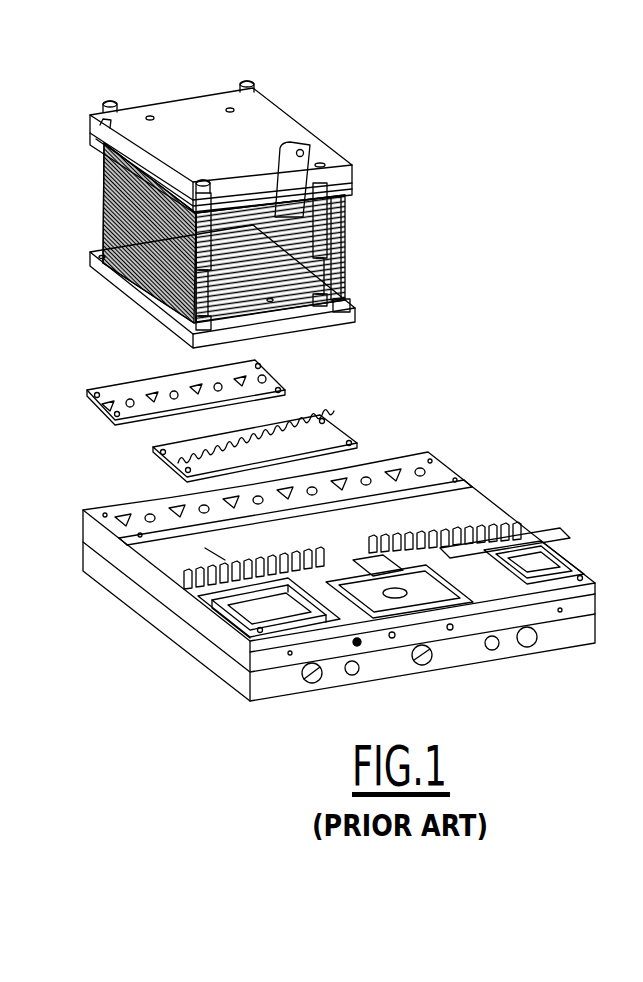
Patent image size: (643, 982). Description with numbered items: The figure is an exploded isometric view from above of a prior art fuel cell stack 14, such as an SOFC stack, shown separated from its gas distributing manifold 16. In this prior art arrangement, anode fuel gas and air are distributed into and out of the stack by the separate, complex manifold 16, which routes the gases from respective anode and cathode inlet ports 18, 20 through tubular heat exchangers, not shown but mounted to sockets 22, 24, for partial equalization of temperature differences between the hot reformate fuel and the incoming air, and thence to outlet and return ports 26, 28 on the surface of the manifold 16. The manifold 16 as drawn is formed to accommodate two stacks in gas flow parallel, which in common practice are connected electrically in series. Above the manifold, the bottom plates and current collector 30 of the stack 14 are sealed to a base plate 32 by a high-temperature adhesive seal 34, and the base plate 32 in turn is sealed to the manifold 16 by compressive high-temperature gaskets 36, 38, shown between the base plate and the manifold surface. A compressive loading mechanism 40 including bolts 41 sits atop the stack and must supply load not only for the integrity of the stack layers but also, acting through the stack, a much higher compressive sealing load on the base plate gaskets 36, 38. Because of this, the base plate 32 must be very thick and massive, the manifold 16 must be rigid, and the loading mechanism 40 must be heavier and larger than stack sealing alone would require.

The fuel cell stack 14 is at (303, 117).
The gas distributing manifold 16 is at (349, 540).
The anode inlet port 18 is at (357, 674).
The cathode inlet port 20 is at (310, 683).
The socket 22 is at (215, 655).
The socket 24 is at (548, 559).
The outlet port 26 is at (212, 562).
The return port 28 is at (152, 502).
The bottom plates and current collector 30 is at (335, 300).
The base plate 32 is at (330, 322).
The high-temperature adhesive seal 34 is at (337, 307).
The compressive high-temperature gasket 36 is at (287, 375).
The compressive high-temperature gasket 38 is at (345, 430).
The compressive loading mechanism 40 is at (249, 206).
The bolts 41 is at (106, 144).